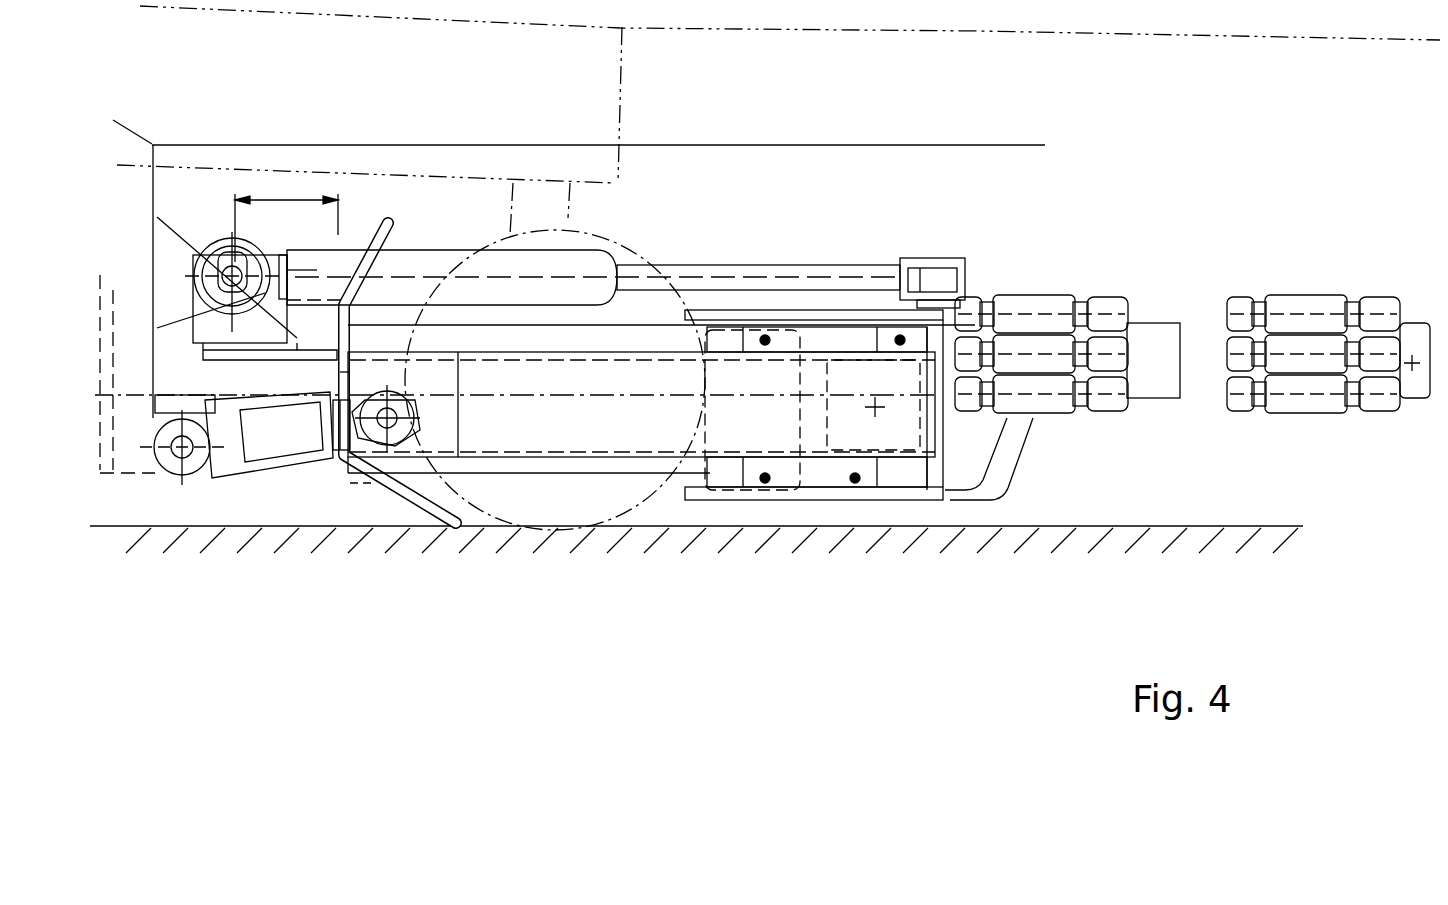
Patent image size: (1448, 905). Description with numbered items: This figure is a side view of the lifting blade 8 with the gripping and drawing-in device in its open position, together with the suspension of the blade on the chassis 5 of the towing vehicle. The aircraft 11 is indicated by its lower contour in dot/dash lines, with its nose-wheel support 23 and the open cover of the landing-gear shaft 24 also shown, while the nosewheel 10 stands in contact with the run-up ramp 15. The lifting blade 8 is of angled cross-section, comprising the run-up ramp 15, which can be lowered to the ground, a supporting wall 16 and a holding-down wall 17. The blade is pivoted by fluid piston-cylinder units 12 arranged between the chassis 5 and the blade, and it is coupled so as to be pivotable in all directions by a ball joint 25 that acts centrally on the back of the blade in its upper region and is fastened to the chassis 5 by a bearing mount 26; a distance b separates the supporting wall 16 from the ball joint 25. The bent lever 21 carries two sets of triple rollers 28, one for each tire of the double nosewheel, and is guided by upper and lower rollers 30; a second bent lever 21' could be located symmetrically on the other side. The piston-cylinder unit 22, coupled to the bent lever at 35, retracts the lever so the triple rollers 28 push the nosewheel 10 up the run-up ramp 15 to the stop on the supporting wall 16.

The chassis 5 is at (152, 126).
The lifting blade 8 is at (345, 235).
The nosewheel 10 is at (683, 300).
The aircraft 11 is at (793, 40).
The fluid piston-cylinder units 12 is at (283, 443).
The run-up ramp 15 is at (418, 500).
The supporting wall 16 is at (330, 413).
The holding-down wall 17 is at (377, 240).
The bent lever 21 is at (1069, 481).
The end piece 21' is at (1374, 481).
The piston-cylinder unit 22 is at (431, 262).
The nose-wheel support 23 is at (580, 213).
The open cover of the landing-gear shaft 24 is at (630, 66).
The ball joint 25 is at (225, 235).
The bearing mount 26 is at (175, 300).
The triple rollers 28 is at (1287, 385).
The rollers 30 is at (765, 335).
The coupling point of piston-cylinder unit to bent lever 35 is at (938, 280).